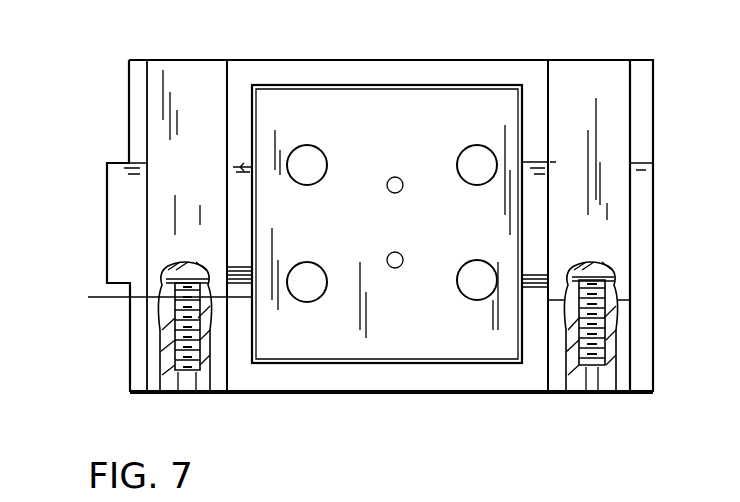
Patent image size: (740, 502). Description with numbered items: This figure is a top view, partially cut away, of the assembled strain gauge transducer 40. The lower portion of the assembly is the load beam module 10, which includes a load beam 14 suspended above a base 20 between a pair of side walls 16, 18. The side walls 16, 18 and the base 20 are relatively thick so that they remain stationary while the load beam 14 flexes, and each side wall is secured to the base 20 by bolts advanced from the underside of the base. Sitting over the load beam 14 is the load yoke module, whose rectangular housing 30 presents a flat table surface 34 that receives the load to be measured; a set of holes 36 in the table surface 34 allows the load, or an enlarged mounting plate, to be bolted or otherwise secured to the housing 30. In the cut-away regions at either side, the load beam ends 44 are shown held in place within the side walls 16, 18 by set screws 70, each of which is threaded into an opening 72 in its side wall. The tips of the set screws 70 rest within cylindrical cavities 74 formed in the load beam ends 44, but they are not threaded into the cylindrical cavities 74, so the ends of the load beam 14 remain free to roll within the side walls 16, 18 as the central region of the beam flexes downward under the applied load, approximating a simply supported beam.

The load beam module 10 is at (600, 58).
The load beam 14 is at (243, 165).
The side wall 16 is at (608, 322).
The side wall 18 is at (166, 333).
The base 20 is at (273, 393).
The rectangular housing 30 is at (453, 364).
The table surface 34 is at (447, 337).
The holes 36 is at (466, 157).
The strain gauge transducer 40 is at (88, 90).
The load beam ends 44 is at (187, 266).
The set screws 70 is at (180, 394).
The opening 72 is at (190, 394).
The cylindrical cavities 74 is at (678, 288).